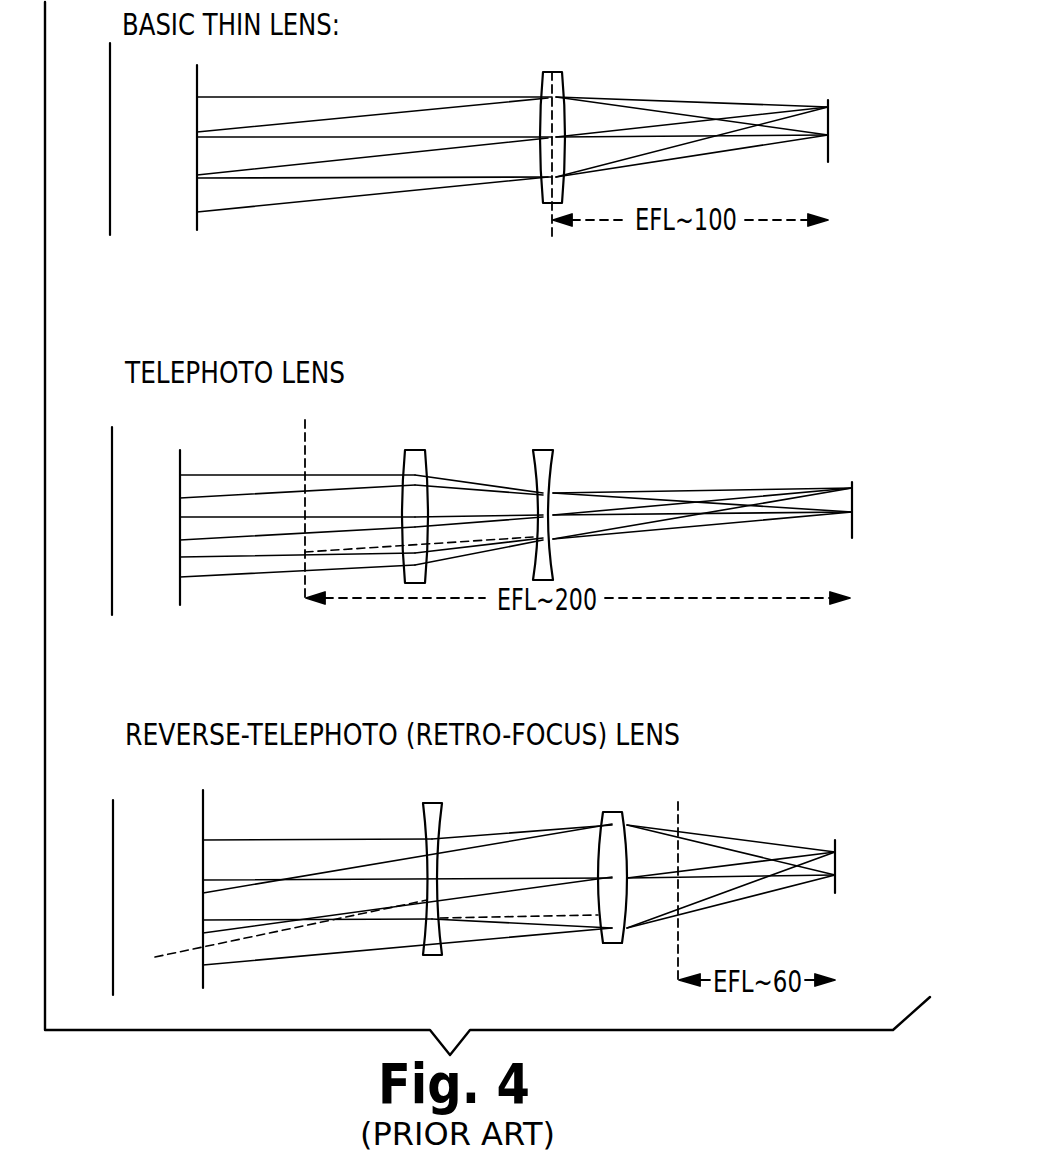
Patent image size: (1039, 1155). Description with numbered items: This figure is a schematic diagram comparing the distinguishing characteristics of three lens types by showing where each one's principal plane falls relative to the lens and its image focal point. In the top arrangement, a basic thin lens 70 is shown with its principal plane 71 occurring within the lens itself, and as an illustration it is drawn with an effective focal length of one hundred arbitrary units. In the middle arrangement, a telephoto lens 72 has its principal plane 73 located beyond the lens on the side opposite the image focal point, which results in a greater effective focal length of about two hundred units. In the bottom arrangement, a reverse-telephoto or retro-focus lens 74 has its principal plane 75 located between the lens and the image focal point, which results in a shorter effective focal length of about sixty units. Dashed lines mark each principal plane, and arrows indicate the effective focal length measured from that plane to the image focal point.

The basic thin lens 70 is at (565, 82).
The principal plane 71 is at (552, 219).
The telephoto lens 72 is at (563, 445).
The principal plane 73 is at (305, 439).
The retro-focus lens 74 is at (627, 801).
The principal plane 75 is at (680, 822).